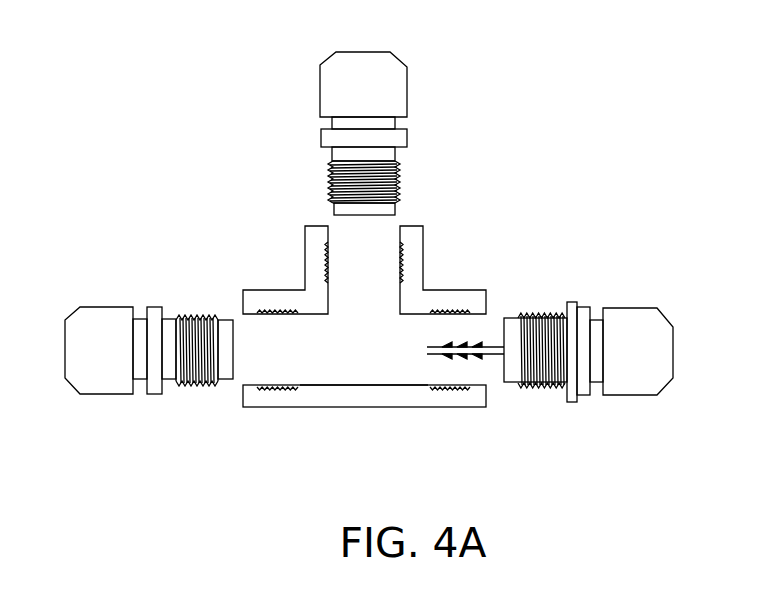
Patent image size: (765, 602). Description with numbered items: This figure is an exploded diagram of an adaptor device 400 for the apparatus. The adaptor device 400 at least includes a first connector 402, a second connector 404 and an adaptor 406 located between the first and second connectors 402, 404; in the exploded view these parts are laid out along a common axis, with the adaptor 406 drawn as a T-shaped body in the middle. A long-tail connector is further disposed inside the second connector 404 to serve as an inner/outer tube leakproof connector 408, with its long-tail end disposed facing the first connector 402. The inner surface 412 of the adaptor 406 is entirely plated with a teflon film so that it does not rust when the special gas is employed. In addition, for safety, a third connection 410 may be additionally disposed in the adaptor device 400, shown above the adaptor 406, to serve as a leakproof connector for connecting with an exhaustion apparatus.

The adaptor device 400 is at (118, 94).
The first connector 402 is at (107, 307).
The second connector 404 is at (630, 308).
The adaptor 406 is at (403, 407).
The inner/outer tube leakproof connector 408 is at (490, 347).
The third connection 410 is at (320, 90).
The inner surface 412 is at (356, 383).